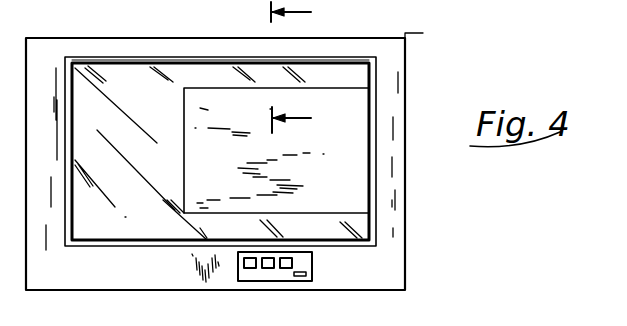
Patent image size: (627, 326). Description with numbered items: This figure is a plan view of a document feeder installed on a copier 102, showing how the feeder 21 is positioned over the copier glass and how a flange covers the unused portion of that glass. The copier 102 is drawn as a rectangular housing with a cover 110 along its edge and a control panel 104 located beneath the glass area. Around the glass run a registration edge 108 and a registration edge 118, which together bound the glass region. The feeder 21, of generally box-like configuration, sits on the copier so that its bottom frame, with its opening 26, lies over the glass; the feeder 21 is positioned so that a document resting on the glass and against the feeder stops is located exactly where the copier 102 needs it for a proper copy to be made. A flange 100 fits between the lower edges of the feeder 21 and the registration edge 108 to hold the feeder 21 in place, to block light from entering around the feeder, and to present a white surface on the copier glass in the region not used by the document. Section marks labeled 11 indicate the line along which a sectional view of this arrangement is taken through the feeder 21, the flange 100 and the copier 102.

The flange 100 is at (115, 72).
The copier 102 is at (415, 74).
The control panel 104 is at (283, 272).
The registration edge 108 is at (190, 62).
The cover 110 is at (432, 37).
The registration edge 118 is at (373, 176).
The section line 11- 11 is at (302, 67).
The feeder 21 is at (333, 158).
The opening 26 is at (200, 157).